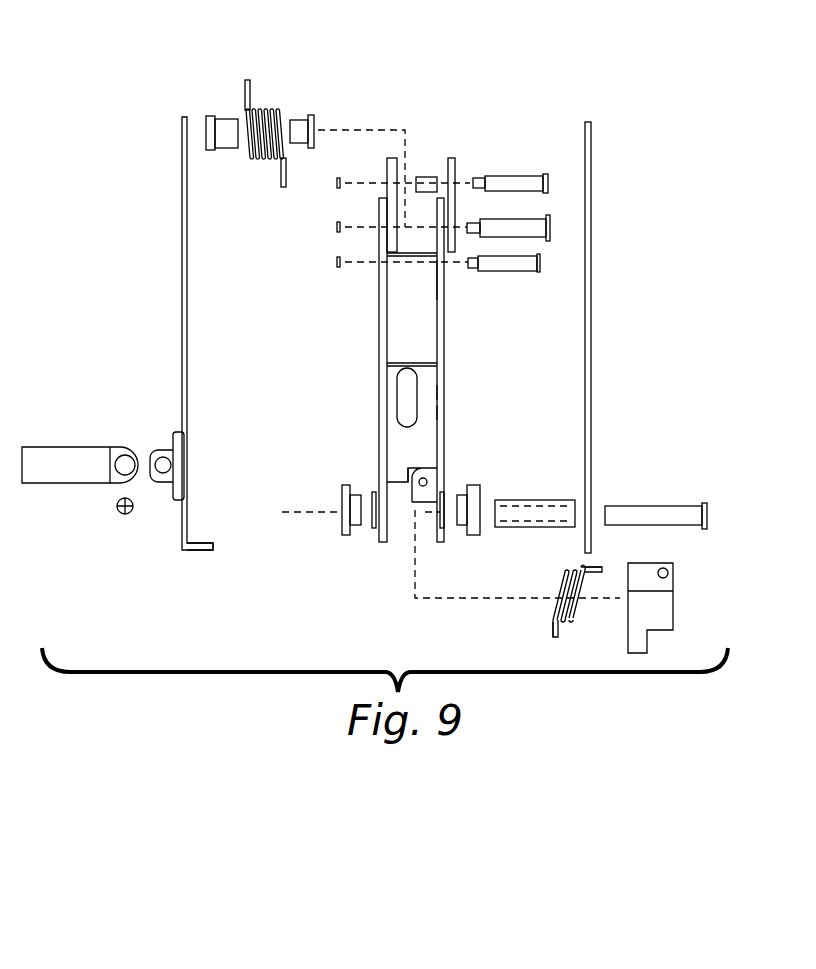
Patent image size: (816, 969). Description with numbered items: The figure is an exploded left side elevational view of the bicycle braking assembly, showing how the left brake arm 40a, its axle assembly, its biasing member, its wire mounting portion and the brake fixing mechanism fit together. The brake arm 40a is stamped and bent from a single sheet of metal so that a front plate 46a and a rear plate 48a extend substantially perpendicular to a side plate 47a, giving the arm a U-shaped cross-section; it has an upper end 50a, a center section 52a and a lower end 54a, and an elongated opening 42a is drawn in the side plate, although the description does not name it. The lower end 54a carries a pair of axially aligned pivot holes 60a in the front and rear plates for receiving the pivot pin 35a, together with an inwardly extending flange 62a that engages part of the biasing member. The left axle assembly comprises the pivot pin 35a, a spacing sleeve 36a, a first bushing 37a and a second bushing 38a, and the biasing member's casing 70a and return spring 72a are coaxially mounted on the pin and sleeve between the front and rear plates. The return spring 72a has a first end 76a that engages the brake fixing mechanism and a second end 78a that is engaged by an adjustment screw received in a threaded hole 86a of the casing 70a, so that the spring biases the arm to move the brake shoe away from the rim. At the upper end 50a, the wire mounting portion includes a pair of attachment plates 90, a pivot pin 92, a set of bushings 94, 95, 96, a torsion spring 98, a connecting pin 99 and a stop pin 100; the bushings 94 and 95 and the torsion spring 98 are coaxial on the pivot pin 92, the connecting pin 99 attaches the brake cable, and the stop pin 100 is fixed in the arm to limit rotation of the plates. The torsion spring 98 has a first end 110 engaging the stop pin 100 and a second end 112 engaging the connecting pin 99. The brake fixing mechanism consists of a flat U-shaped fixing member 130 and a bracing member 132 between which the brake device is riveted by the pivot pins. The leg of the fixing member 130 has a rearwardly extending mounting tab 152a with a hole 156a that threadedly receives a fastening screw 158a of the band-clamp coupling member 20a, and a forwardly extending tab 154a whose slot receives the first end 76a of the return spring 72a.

The coupling member 20a is at (62, 483).
The pivot pin 35a is at (668, 506).
The spacing sleeve 36a is at (562, 500).
The first bushing 37a is at (470, 485).
The second bushing 38a is at (342, 485).
The brake arm 40a is at (448, 334).
The slot 42a is at (397, 408).
The front plate 46a is at (442, 393).
The side plate 47a is at (412, 298).
The rear plate 48a is at (437, 365).
The upper end 50a is at (425, 299).
The center section 52a is at (428, 409).
The lower end 54a is at (418, 458).
The pivot holes 60a is at (372, 515).
The inwardly extending flange 62a is at (422, 493).
The casing 70a is at (662, 563).
The return spring 72a is at (572, 618).
The first end 76a is at (555, 628).
The second end 78a is at (597, 563).
The threaded hole 86a is at (668, 578).
The attachment plates 90 is at (452, 160).
The pivot pin 92 is at (548, 228).
The bushing 94 is at (208, 150).
The bushing 95 is at (310, 145).
The bushing 96 is at (437, 177).
The torsion spring 98 is at (248, 157).
The connecting pin 99 is at (547, 182).
The stop pin 100 is at (540, 263).
The first end 110 is at (280, 172).
The second end 112 is at (250, 92).
The fixing member 130 is at (182, 310).
The bracing member 132 is at (593, 342).
The mounting tab 152a is at (173, 485).
The tab 154a is at (200, 550).
The hole 156a is at (160, 453).
The fastening screw 158a is at (125, 515).